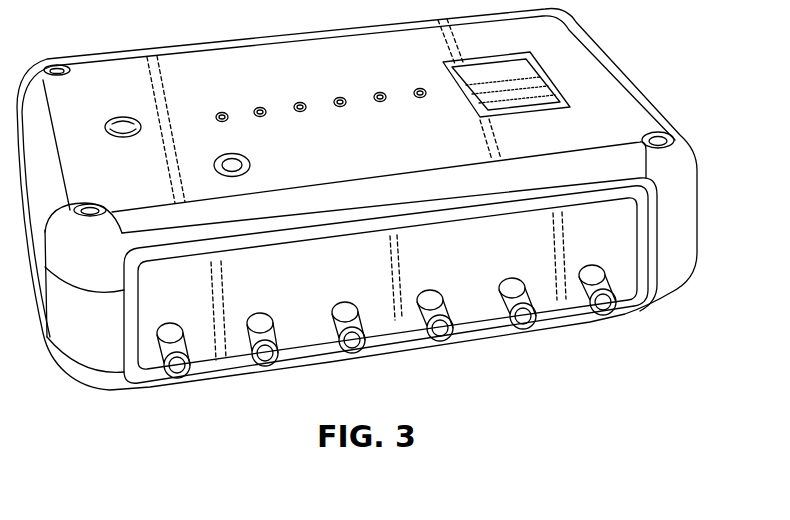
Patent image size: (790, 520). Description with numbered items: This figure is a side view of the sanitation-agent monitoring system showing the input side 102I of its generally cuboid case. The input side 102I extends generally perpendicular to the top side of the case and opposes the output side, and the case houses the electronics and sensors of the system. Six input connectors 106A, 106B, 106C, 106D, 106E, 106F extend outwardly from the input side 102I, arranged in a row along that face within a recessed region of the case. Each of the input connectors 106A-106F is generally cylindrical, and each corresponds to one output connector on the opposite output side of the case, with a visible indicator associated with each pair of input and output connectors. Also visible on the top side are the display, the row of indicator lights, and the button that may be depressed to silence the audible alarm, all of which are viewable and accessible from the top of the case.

The input side 102I is at (640, 225).
The input connector 106A is at (607, 328).
The input connector 106B is at (517, 341).
The input connector 106C is at (444, 351).
The input connector 106D is at (332, 356).
The input connector 106E is at (267, 374).
The input connector 106F is at (155, 363).